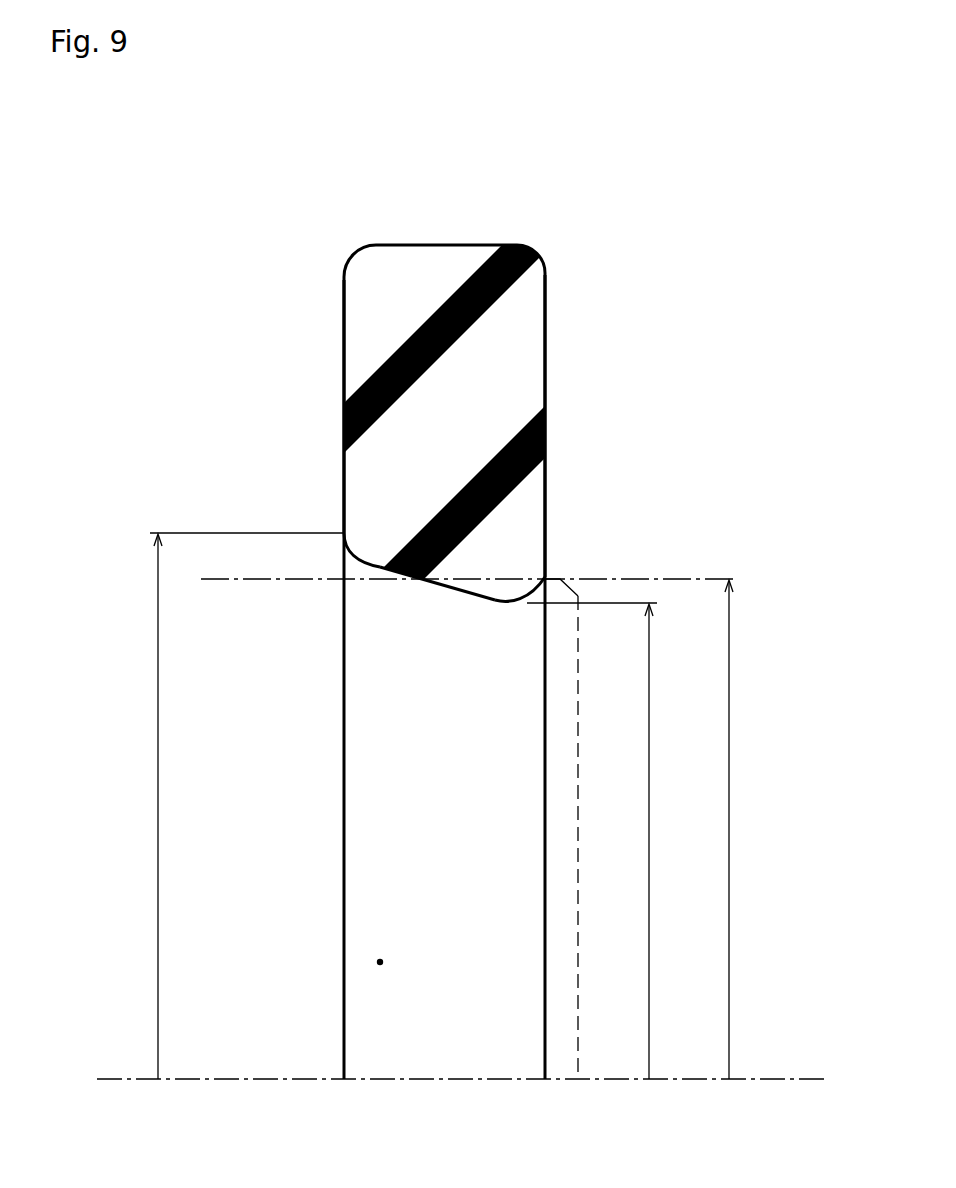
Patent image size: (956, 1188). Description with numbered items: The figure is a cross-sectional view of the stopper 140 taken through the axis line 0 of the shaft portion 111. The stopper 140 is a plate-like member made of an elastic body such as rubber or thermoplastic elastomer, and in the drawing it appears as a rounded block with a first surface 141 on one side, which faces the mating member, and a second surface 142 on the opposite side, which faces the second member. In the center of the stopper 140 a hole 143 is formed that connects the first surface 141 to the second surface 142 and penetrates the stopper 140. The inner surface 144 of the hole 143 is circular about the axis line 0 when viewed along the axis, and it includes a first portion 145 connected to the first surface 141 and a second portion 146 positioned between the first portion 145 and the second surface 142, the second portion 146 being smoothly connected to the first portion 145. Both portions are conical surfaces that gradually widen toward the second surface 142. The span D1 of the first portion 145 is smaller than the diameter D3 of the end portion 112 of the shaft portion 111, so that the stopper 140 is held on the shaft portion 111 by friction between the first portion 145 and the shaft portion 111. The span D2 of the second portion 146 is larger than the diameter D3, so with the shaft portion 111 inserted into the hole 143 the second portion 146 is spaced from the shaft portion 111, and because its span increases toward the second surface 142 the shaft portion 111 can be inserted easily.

The stopper 140 is at (514, 338).
The first surface 141 is at (545, 370).
The second surface 142 is at (344, 325).
The hole 143 is at (380, 962).
The inner surface 144 is at (444, 613).
The first portion 145 is at (496, 615).
The second portion 146 is at (377, 568).
The shaft portion 111 is at (232, 578).
The end portion 112 is at (562, 1069).
The axis line 0 is at (815, 1078).
The span of the first portion D1 is at (649, 847).
The span of the second portion D2 is at (158, 813).
The diameter of the end portion D3 is at (729, 836).